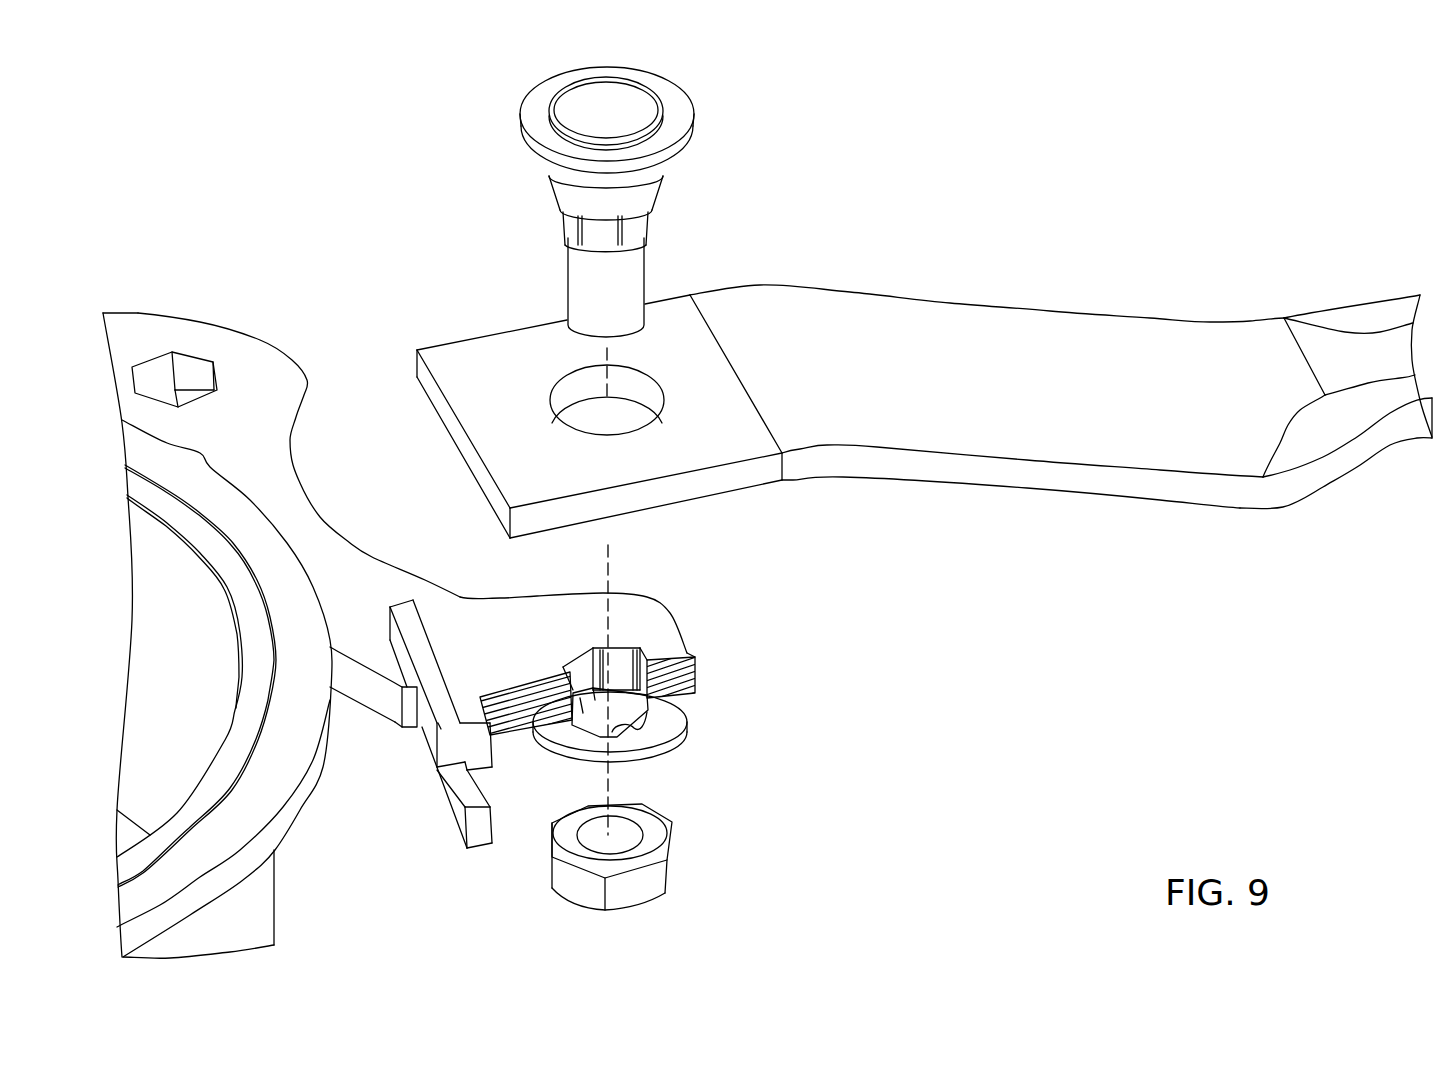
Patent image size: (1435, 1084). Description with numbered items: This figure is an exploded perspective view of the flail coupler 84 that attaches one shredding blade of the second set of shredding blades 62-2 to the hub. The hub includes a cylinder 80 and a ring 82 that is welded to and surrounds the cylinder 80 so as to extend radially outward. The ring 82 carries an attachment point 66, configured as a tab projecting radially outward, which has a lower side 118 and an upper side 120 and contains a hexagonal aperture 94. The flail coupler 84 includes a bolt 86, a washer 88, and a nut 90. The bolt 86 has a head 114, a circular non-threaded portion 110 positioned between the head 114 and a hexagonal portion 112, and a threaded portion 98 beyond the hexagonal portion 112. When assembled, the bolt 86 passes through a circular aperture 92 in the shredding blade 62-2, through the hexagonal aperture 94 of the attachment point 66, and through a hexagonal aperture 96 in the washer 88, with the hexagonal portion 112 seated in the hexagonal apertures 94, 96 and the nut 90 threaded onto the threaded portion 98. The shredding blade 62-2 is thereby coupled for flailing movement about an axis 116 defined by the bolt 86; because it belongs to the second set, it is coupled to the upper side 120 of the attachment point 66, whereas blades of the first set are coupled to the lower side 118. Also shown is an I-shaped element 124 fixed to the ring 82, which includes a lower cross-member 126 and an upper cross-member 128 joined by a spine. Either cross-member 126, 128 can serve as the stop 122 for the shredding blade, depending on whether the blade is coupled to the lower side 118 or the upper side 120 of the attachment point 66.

The flail coupler 84 is at (724, 71).
The bolt 86 is at (542, 208).
The head 114 is at (541, 101).
The circular non-threaded portion 110 is at (657, 190).
The hexagonal portion 112 is at (635, 224).
The threaded portion 98 is at (633, 277).
The second set of shredding blades 62-2 is at (956, 322).
The circular aperture 92 is at (640, 387).
The axis 116 is at (607, 545).
The ring 82 is at (258, 380).
The cylinder 80 is at (277, 917).
The stop 122 is at (428, 635).
The upper cross-member 128 is at (446, 631).
The I-shaped element 124 is at (413, 778).
The lower cross-member 126 is at (450, 824).
The attachment point 66 is at (658, 602).
The upper side 120 is at (670, 643).
The lower side 118 is at (658, 702).
The hexagonal aperture 94 is at (580, 670).
The washer 88 is at (672, 750).
The hexagonal aperture 96 is at (637, 727).
The nut 90 is at (640, 885).